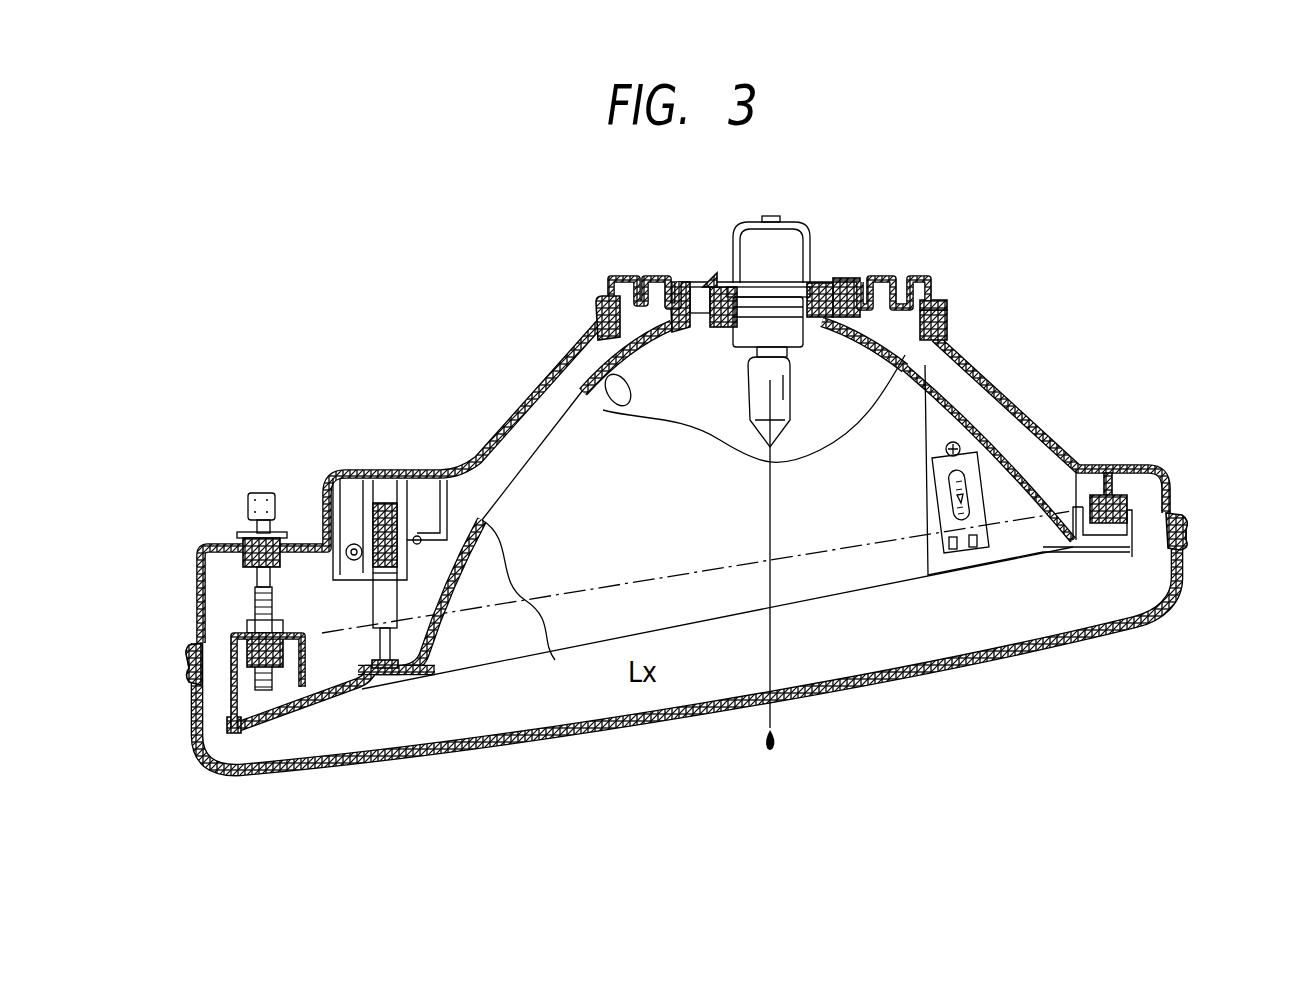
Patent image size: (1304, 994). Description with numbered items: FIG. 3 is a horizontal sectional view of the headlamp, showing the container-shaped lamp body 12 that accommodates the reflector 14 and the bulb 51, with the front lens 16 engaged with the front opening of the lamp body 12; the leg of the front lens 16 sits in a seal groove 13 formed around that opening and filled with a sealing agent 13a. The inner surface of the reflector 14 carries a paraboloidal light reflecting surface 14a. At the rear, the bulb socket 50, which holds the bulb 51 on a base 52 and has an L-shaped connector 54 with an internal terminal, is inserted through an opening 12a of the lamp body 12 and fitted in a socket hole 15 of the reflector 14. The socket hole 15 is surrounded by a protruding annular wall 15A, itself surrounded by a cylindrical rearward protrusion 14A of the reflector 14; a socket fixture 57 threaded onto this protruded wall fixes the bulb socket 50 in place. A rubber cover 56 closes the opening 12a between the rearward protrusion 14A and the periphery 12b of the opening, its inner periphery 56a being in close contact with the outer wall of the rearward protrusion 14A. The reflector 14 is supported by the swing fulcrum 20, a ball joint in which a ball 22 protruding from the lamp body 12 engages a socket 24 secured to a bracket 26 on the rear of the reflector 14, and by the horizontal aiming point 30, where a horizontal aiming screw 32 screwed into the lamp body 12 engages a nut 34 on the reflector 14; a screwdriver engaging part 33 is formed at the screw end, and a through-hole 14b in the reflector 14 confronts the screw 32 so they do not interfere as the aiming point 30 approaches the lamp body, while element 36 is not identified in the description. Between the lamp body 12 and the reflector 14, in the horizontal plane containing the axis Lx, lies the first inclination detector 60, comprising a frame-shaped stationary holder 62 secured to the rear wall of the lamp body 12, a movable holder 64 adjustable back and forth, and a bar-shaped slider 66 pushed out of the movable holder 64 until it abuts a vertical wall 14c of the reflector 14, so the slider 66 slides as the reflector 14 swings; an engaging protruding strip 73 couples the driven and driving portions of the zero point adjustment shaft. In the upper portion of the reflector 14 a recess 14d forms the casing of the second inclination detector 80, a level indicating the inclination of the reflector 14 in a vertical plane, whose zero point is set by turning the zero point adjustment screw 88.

The lamp body 12 is at (990, 377).
The opening 12a is at (947, 322).
The periphery of the lamp body opening 12b is at (932, 300).
The seal groove 13 is at (186, 656).
The sealing agent 13a is at (187, 670).
The reflector 14 is at (548, 452).
The light reflecting surface 14a is at (590, 380).
The cylindrical rearward protrusion 14A is at (857, 282).
The through-hole 14b is at (268, 712).
The vertical wall 14c is at (397, 678).
The recess 14d is at (1034, 535).
The socket hole 15 is at (752, 318).
The protruding annular wall 15A is at (828, 288).
The front lens 16 is at (525, 748).
The swing fulcrum 20 is at (1140, 503).
The ball 22 is at (1124, 504).
The socket 24 is at (1117, 557).
The bracket 26 is at (1079, 466).
The horizontal aiming point 30 is at (238, 613).
The horizontal aiming screw 32 is at (260, 582).
The screwdriver engaging part 33 is at (260, 490).
The nut 34 is at (247, 660).
The nut 36 is at (232, 636).
The bulb socket 50 is at (812, 233).
The bulb 51 is at (790, 394).
The base 52 is at (752, 320).
The L-shaped connector 54 is at (770, 238).
The rubber cover 56 is at (620, 279).
The inner periphery of the rubber cover 56a is at (592, 340).
The socket fixture 57 is at (708, 282).
The first inclination detector 60 is at (407, 633).
The stationary holder 62 is at (353, 532).
The movable holder 64 is at (383, 503).
The slider 66 is at (376, 676).
The engaging protruding strip 73 is at (348, 546).
The second inclination detector 80 is at (969, 552).
The zero point adjustment screw 88 is at (946, 448).